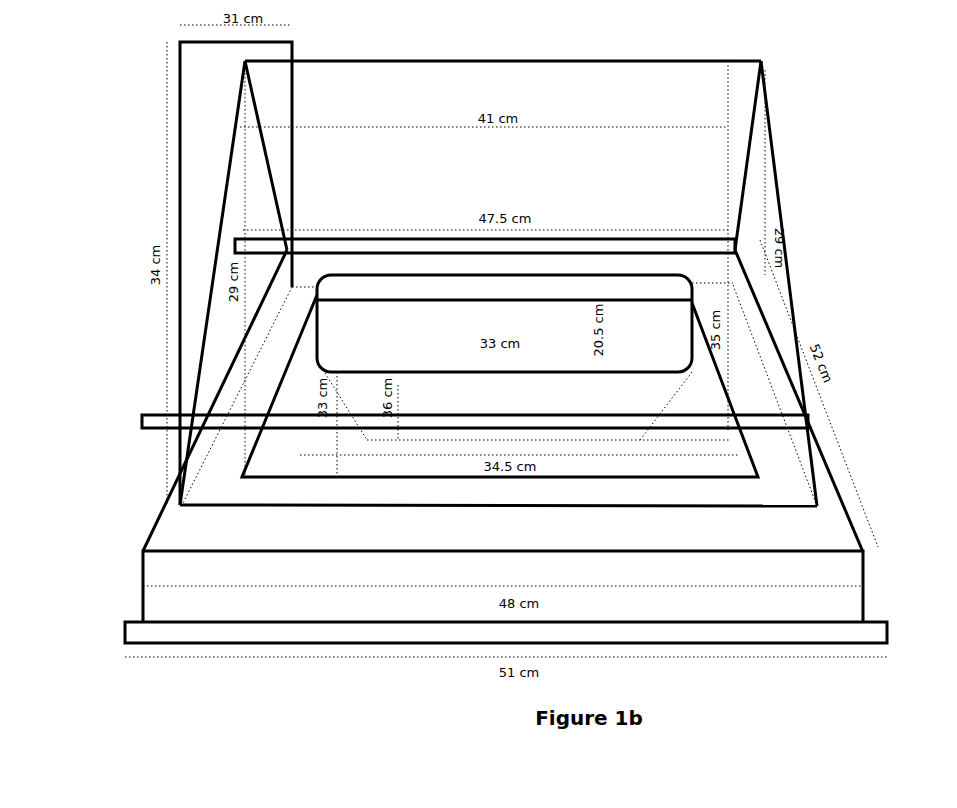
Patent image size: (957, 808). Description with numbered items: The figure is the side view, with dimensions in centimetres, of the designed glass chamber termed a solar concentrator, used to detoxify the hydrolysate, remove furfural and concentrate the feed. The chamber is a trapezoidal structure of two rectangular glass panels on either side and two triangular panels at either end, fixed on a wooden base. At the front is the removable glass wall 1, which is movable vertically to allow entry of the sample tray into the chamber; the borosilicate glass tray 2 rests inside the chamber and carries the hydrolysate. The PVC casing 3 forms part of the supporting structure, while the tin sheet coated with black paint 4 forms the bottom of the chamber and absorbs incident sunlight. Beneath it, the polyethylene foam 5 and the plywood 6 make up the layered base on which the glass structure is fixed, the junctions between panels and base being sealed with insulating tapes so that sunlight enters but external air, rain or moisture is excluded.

The removable glass wall 1 is at (180, 136).
The Borosilicate glass tray 2 is at (316, 347).
The PVC casing 3 is at (142, 421).
The tin sheet coated with black paint 4 is at (190, 465).
The polyethylene foam 5 is at (143, 569).
The plywood 6 is at (125, 623).